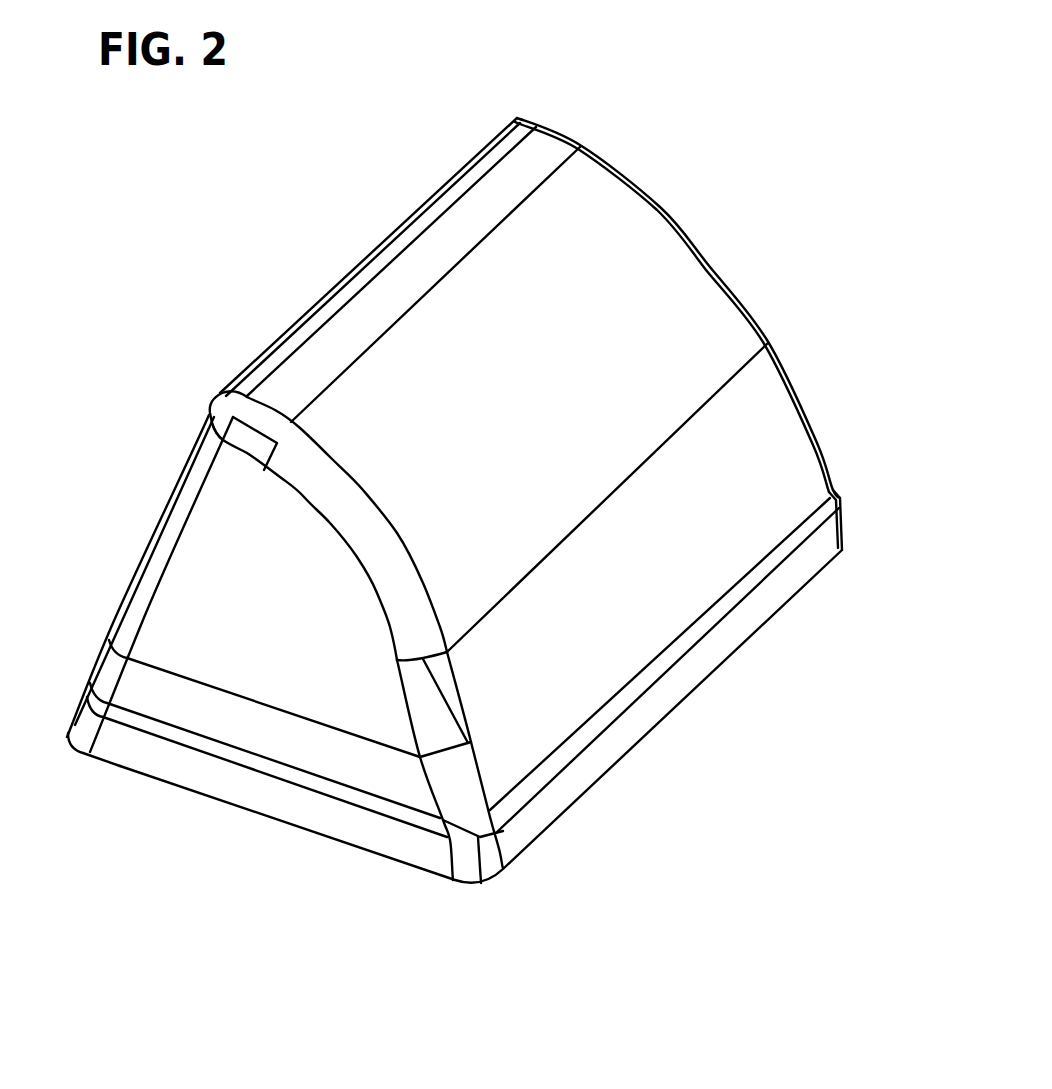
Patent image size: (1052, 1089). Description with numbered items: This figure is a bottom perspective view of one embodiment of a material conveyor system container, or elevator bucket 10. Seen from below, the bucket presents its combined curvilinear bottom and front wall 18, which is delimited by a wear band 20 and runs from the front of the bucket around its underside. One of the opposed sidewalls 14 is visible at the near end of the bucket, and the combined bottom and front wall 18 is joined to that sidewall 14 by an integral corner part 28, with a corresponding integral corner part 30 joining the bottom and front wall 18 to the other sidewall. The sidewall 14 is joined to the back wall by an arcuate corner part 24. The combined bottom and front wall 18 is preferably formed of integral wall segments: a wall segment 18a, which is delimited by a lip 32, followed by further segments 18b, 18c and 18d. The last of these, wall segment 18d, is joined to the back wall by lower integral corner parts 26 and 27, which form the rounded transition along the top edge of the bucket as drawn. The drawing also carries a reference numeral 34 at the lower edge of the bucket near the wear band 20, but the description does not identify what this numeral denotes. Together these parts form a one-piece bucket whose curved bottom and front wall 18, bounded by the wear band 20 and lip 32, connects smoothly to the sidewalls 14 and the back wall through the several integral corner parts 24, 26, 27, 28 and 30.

The elevator bucket 10 is at (270, 280).
The sidewall 14 is at (290, 599).
The combined bottom and front wall 18 is at (533, 393).
The wall segment 18a is at (770, 440).
The wall segment 18b is at (620, 258).
The wall segment 18c is at (543, 152).
The wall segment 18d is at (472, 170).
The wear band 20 is at (647, 790).
The arcuate corner part 24 is at (67, 737).
The lower integral corner part 26 is at (210, 405).
The lower integral corner part 27 is at (518, 117).
The integral corner part 28 is at (843, 550).
The integral corner part 30 is at (480, 880).
The lip 32 is at (690, 635).
The base lower strip 34 is at (165, 783).